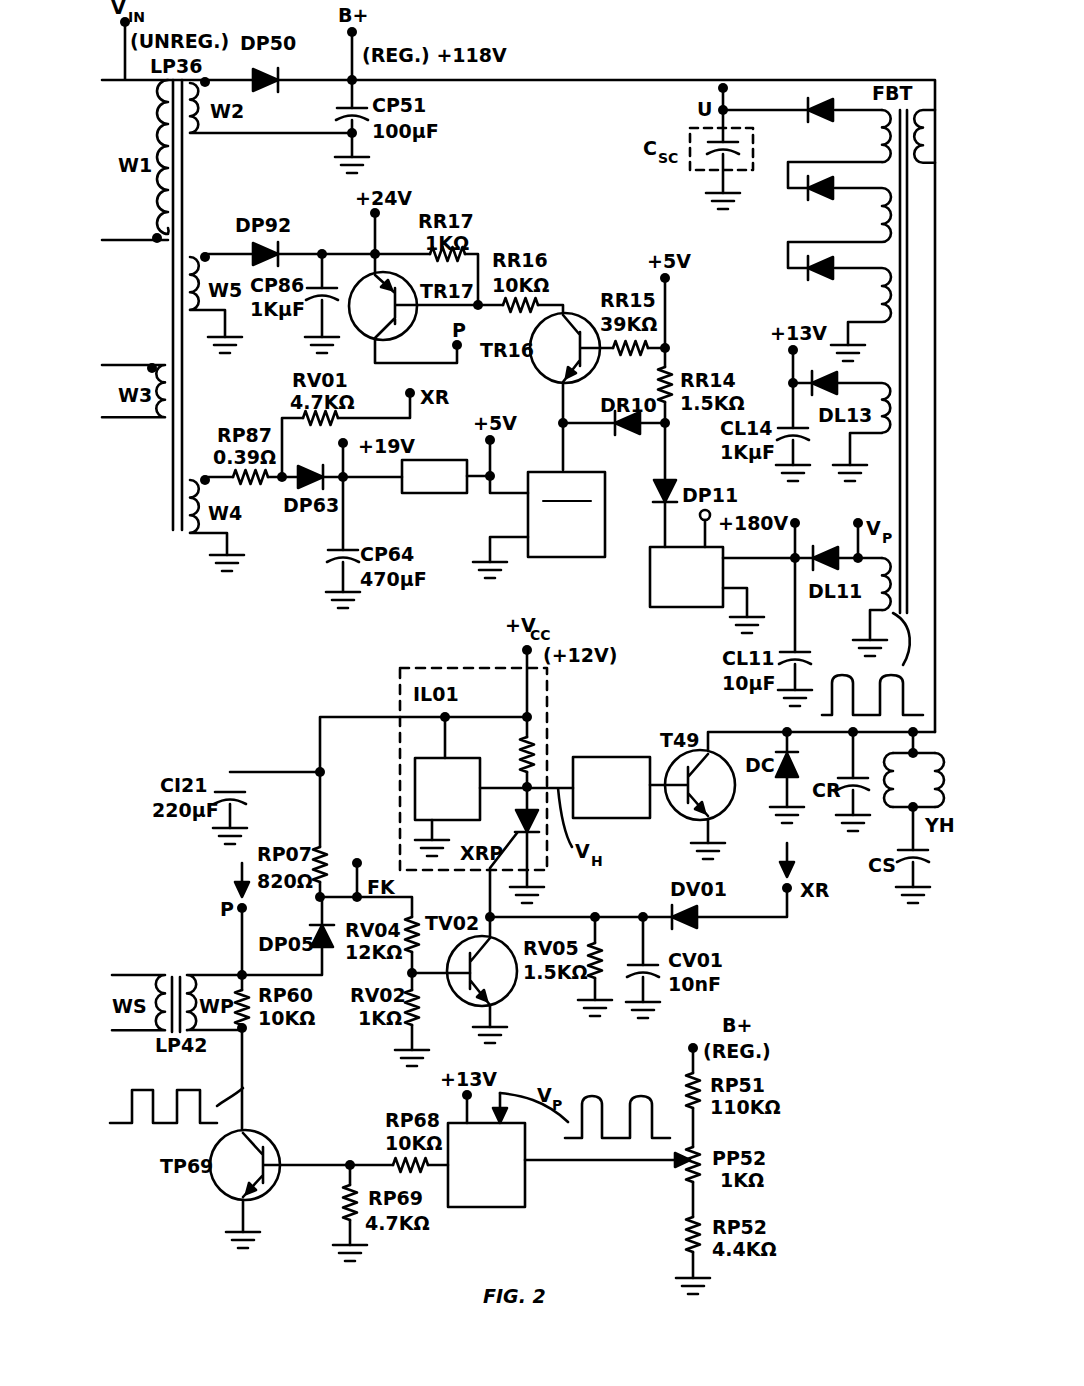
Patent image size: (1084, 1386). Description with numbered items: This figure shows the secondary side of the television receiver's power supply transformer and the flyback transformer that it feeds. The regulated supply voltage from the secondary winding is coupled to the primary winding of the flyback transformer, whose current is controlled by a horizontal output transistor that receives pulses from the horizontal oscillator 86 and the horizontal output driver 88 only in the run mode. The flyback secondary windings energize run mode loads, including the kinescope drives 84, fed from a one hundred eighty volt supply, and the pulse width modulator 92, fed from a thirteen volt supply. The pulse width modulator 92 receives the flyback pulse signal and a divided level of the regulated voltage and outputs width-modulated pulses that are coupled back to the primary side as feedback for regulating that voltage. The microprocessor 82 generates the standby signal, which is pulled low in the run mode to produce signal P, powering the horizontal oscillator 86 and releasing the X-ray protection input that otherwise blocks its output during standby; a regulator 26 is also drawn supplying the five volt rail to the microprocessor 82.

The voltage regulator 26 is at (448, 493).
The microprocessor 82 is at (605, 515).
The kinescope drives 84 is at (650, 562).
The horizontal oscillator 86 is at (414, 760).
The horizontal output driver 88 is at (597, 757).
The pulse width modulator 92 is at (525, 1180).